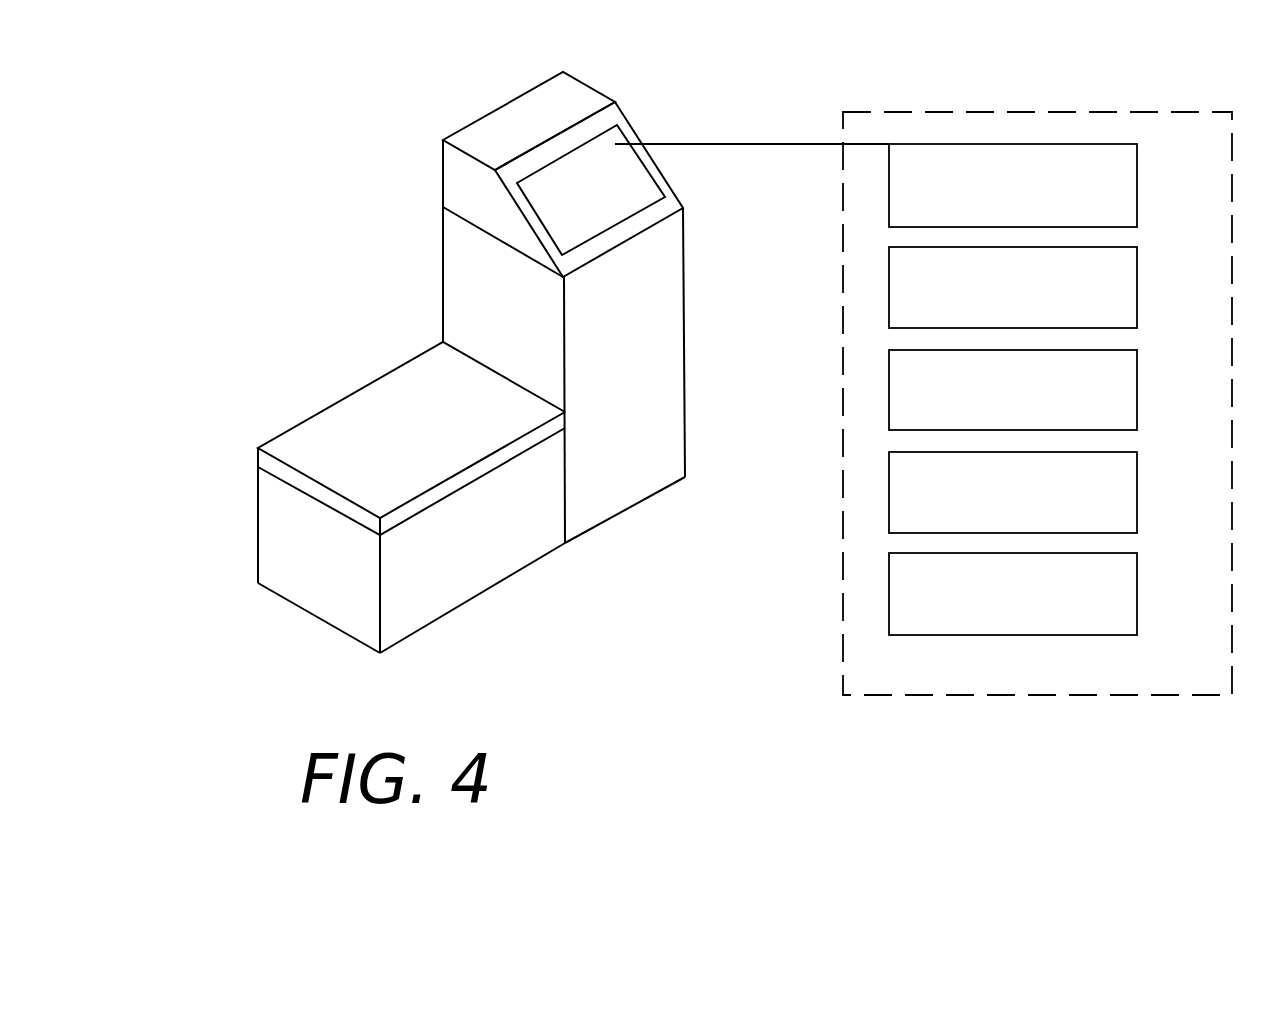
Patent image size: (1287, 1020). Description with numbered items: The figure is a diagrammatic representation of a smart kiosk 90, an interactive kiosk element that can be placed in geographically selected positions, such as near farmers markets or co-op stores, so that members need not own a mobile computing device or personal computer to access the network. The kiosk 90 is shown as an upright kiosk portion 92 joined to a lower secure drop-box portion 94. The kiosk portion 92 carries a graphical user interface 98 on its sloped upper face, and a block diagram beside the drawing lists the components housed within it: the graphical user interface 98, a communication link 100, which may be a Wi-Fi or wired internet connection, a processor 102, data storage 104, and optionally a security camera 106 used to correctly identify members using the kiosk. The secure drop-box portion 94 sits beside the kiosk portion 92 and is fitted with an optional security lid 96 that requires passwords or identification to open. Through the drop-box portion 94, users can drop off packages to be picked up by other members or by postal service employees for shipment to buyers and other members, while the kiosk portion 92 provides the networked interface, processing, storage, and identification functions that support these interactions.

The smart kiosk 90 is at (262, 229).
The kiosk portion 92 is at (482, 117).
The secure drop-box portion 94 is at (280, 527).
The security lid 96 is at (290, 448).
The graphical user interface 98 is at (645, 190).
The communication link 100 is at (1013, 287).
The processor 102 is at (1013, 390).
The data storage 104 is at (1013, 492).
The security camera 106 is at (1013, 594).